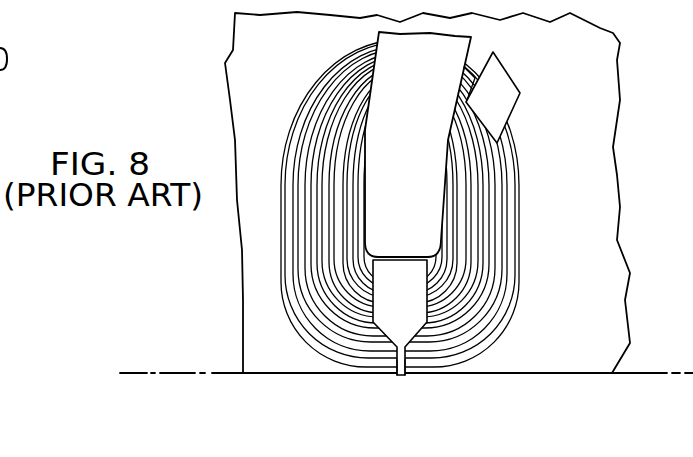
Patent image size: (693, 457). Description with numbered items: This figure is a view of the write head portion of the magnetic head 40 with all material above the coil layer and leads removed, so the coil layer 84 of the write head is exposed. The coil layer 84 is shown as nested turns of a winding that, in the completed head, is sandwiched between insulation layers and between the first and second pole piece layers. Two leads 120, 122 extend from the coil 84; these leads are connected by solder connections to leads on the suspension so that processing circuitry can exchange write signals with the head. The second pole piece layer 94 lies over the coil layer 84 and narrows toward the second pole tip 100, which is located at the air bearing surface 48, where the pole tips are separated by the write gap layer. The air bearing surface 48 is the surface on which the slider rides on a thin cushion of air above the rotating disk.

The magnetic head 40 is at (527, 184).
The coil layer 84 is at (500, 265).
The lead 120 is at (425, 142).
The lead 122 is at (503, 68).
The second pole piece layer 94 is at (414, 304).
The second pole tip 100 is at (401, 375).
The air bearing surface 48 is at (178, 373).